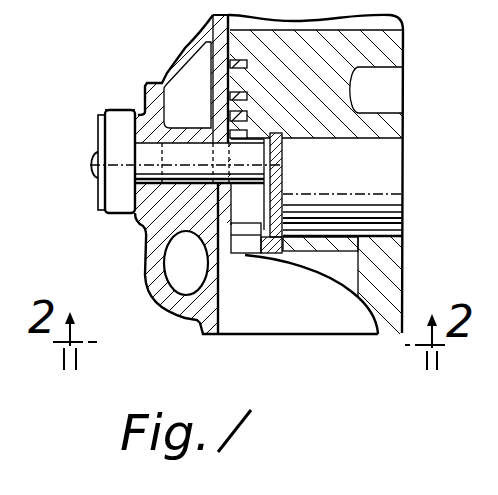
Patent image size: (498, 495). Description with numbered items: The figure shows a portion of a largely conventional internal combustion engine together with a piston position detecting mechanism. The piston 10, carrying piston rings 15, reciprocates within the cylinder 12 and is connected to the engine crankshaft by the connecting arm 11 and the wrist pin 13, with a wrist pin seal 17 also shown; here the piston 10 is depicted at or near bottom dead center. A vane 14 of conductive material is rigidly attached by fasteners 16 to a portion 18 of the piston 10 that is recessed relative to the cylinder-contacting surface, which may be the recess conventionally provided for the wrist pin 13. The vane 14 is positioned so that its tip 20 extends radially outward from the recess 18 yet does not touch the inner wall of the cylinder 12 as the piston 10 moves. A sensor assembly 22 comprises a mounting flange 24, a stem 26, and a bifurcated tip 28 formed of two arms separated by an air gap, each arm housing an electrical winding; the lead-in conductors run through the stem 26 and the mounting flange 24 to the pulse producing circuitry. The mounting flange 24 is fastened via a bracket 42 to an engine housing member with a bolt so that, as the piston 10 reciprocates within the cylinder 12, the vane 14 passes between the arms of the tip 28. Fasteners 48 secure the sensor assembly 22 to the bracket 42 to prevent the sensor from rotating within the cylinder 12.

The piston 10 is at (390, 46).
The connecting arm 11 is at (378, 281).
The cylinder 12 is at (220, 57).
The wrist pin 13 is at (394, 160).
The vane 14 is at (284, 222).
The piston rings 15 is at (248, 92).
The fasteners 16 is at (271, 251).
The wrist pin seal 17 is at (281, 138).
The recessed portion 18 is at (249, 217).
The tip 20 is at (255, 249).
The sensor assembly 22 is at (125, 96).
The mounting flange 24 is at (123, 117).
The stem 26 is at (140, 148).
The bifurcated tip 28 is at (284, 156).
The bracket 42 is at (100, 200).
The fasteners 48 is at (92, 172).